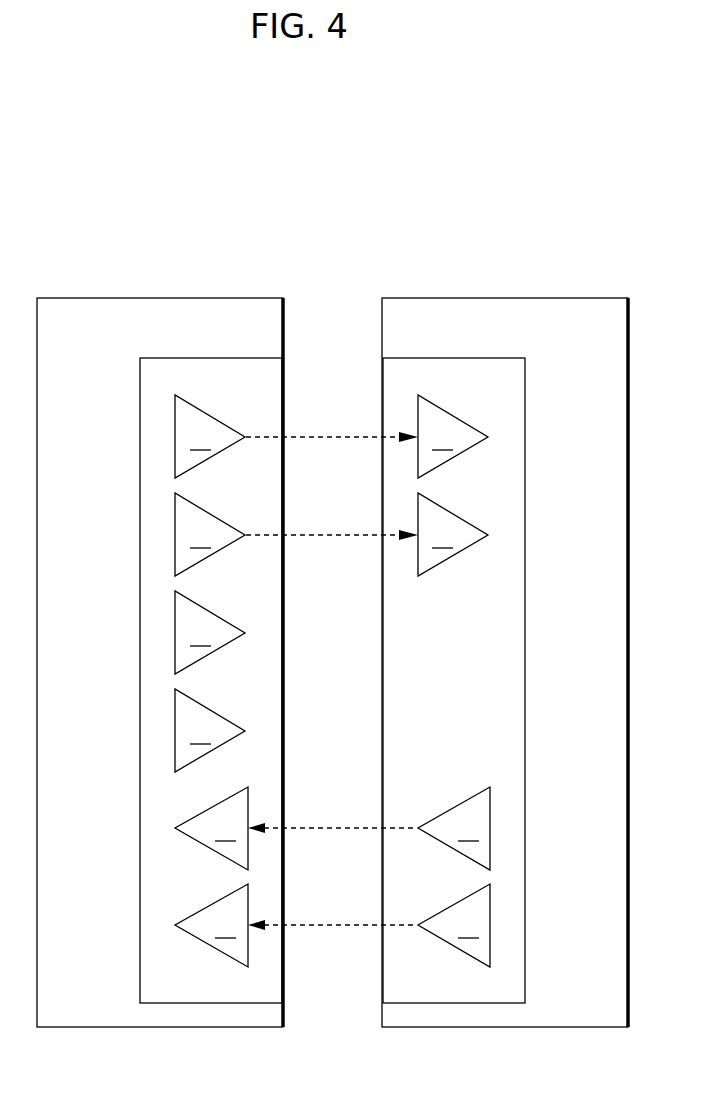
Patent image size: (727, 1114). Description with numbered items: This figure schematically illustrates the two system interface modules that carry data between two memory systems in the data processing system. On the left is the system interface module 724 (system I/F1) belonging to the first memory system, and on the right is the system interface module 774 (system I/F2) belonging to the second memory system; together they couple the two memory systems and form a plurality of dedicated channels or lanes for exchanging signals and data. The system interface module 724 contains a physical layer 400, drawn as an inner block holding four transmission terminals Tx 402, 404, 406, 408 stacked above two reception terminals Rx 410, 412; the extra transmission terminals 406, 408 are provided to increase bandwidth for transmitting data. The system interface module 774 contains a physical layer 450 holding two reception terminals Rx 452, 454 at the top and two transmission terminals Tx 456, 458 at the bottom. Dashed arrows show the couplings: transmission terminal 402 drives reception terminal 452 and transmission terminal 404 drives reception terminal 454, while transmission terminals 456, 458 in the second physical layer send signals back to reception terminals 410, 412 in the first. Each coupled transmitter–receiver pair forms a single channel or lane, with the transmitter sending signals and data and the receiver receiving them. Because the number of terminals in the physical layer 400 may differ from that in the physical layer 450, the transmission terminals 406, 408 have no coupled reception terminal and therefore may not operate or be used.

The system interface module 724 is at (225, 297).
The system interface module 774 is at (570, 297).
The physical layer 400 is at (140, 645).
The physical layer 450 is at (525, 645).
The transmission terminal 402 is at (215, 416).
The transmission terminal 404 is at (215, 514).
The transmission terminal 406 is at (215, 612).
The transmission terminal 408 is at (215, 710).
The reception terminal 410 is at (194, 816).
The reception terminal 412 is at (194, 913).
The reception terminal 452 is at (455, 414).
The reception terminal 454 is at (455, 512).
The transmission terminal 456 is at (455, 814).
The transmission terminal 458 is at (455, 911).